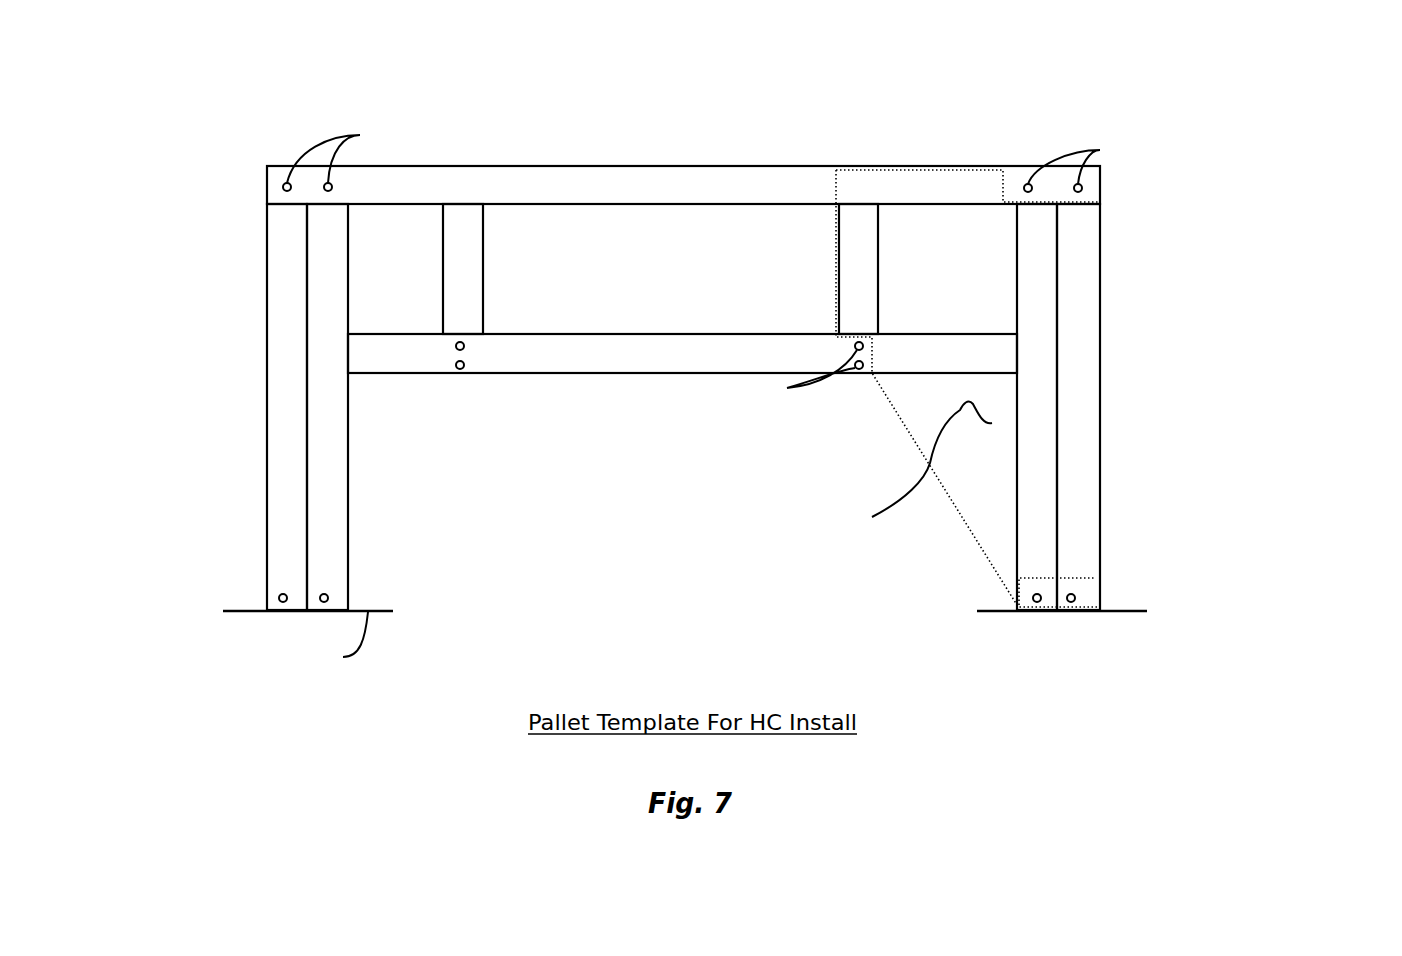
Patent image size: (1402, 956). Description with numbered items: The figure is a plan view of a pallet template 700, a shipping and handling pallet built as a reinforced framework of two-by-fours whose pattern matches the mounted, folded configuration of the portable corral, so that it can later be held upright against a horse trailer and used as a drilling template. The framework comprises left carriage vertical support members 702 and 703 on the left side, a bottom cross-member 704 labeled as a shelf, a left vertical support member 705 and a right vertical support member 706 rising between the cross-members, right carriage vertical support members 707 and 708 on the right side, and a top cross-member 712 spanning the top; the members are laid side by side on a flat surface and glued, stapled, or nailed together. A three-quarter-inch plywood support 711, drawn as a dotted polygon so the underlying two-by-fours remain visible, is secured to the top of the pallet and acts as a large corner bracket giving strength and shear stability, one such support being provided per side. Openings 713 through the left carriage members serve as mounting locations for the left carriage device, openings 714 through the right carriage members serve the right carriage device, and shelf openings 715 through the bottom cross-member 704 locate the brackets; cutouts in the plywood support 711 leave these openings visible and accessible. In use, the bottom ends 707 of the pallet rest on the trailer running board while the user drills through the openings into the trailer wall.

The pallet template 700 is at (192, 125).
The left carriage vertical support member 702 is at (267, 488).
The left carriage vertical support member 703 is at (348, 498).
The bottom cross-member 704 is at (539, 373).
The left vertical support member 705 is at (483, 297).
The right vertical support member 706 is at (858, 228).
The right carriage vertical support member 707 is at (1045, 516).
The right carriage vertical support member 708 is at (1082, 353).
The plywood support 711 is at (978, 495).
The top cross-member 712 is at (735, 166).
The left carriage openings 713 is at (305, 148).
The right carriage openings 714 is at (1048, 165).
The shelf openings 715 is at (456, 365).